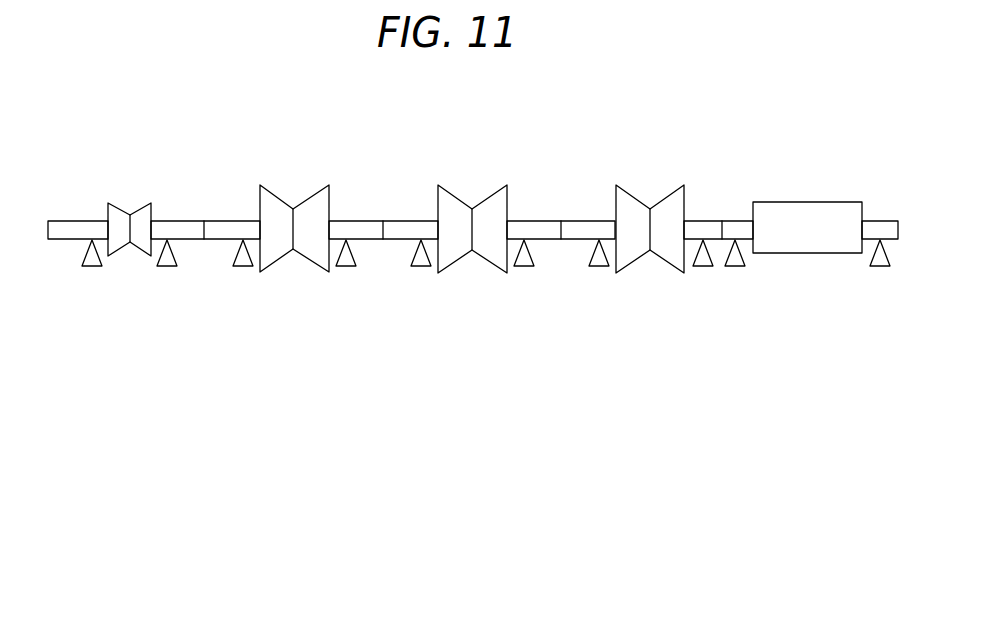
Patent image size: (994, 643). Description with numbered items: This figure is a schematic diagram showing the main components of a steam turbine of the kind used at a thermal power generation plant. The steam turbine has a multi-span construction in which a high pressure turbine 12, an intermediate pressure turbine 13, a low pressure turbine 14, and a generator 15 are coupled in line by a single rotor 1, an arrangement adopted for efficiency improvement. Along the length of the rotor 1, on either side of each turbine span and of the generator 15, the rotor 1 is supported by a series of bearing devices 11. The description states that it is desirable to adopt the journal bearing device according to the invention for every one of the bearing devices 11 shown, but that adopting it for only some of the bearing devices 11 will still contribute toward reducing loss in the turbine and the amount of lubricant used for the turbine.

The rotor 1 is at (68, 220).
The bearing devices 11 is at (92, 266).
The high pressure turbine 12 is at (130, 243).
The intermediate pressure turbine 13 is at (300, 240).
The low pressure turbine 14 is at (479, 240).
The generator 15 is at (807, 253).